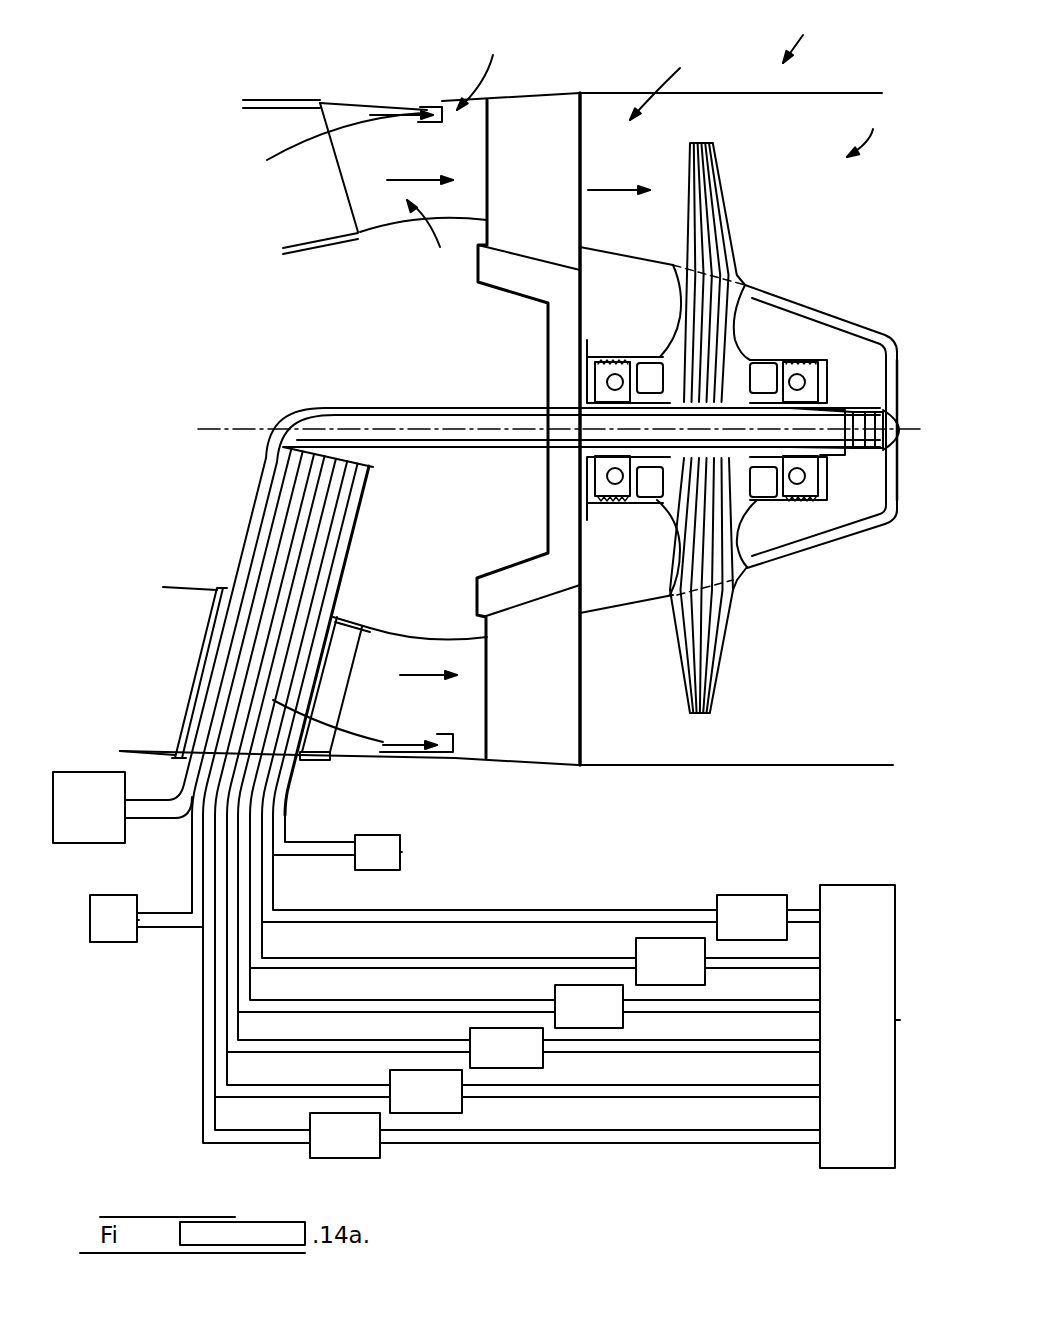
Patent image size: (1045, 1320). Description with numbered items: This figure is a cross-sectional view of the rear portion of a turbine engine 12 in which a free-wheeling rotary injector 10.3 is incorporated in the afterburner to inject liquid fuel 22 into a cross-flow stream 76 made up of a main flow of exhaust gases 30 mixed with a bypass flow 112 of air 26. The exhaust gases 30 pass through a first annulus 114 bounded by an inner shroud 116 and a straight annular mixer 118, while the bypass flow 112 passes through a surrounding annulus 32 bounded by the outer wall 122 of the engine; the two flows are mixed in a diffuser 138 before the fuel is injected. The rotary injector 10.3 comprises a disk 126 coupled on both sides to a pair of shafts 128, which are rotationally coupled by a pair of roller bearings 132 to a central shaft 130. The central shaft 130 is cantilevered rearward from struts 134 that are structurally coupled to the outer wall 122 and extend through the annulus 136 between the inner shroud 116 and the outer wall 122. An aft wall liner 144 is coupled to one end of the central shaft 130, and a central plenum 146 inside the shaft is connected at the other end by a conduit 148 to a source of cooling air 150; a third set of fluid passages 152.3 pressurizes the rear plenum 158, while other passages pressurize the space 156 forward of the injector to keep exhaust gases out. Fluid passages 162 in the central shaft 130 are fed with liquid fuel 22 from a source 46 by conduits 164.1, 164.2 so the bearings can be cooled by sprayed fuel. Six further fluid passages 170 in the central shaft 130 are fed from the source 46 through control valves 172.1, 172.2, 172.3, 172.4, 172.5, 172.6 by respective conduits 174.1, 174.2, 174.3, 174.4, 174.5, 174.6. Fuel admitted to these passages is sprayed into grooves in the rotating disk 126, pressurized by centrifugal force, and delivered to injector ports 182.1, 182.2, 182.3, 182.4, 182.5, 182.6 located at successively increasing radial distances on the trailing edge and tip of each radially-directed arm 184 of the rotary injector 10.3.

The free-wheeling rotary injector 10.3 is at (875, 130).
The turbine engine 12 is at (804, 38).
The liquid fuel 22 is at (875, 1025).
The air 26 is at (250, 144).
The exhaust gases 30 is at (407, 176).
The surrounding annulus 32 is at (482, 70).
The source of liquid fuel 46 is at (402, 843).
The cross-flow stream 76 is at (600, 187).
The bypass flow 112 is at (382, 110).
The first annulus 114 is at (434, 240).
The inner shroud 116 is at (382, 228).
The mixer 118 is at (285, 158).
The outer wall 122 is at (267, 100).
The disk 126 is at (680, 298).
The shafts 128 is at (643, 357).
The central shaft 130 is at (802, 468).
The roller bearings 132 is at (637, 493).
The struts 134 is at (587, 100).
The annulus 136 is at (678, 82).
The diffuser 138 is at (572, 60).
The aft wall liner 144 is at (792, 303).
The central plenum 146 is at (790, 447).
The conduit 148 is at (260, 468).
The source of cooling air 150 is at (78, 770).
The third set of fluid passages 152.3 is at (878, 350).
The space external of the labyrinth seal housing 156 is at (587, 513).
The rear plenum 158 is at (845, 347).
The fluid passages 162 is at (798, 428).
The conduit 164.1 is at (317, 843).
The conduit 164.2 is at (193, 862).
The fluid passages 170 is at (757, 395).
The control valve 172.1 is at (374, 1149).
The control valve 172.2 is at (456, 1106).
The control valve 172.3 is at (536, 1062).
The control valve 172.4 is at (618, 1020).
The control valve 172.5 is at (700, 975).
The control valve 172.6 is at (782, 930).
The conduit 174.1 is at (246, 1140).
The conduit 174.2 is at (328, 1070).
The conduit 174.3 is at (357, 1027).
The conduit 174.4 is at (395, 987).
The conduit 174.5 is at (447, 940).
The conduit 174.6 is at (546, 909).
The injector port 182.1 is at (732, 258).
The injector port 182.2 is at (728, 233).
The injector port 182.3 is at (725, 208).
The injector port 182.4 is at (722, 185).
The injector port 182.5 is at (717, 163).
The injector port 182.6 is at (710, 137).
The radially-directed arm 184 is at (687, 163).